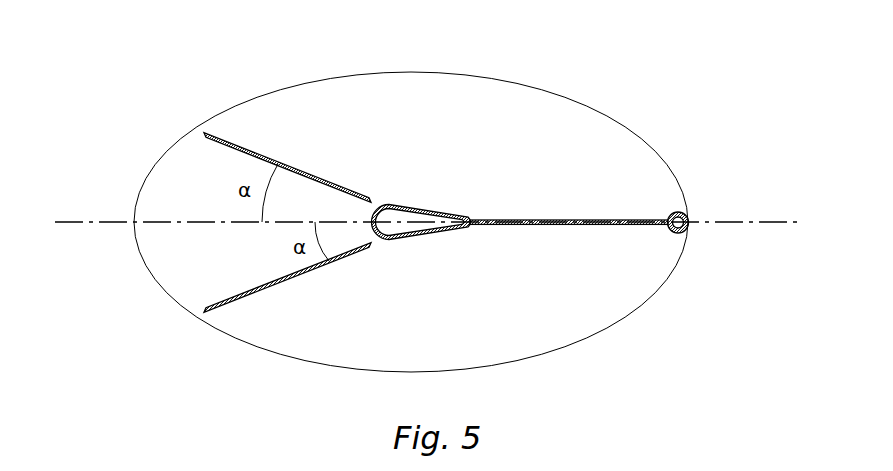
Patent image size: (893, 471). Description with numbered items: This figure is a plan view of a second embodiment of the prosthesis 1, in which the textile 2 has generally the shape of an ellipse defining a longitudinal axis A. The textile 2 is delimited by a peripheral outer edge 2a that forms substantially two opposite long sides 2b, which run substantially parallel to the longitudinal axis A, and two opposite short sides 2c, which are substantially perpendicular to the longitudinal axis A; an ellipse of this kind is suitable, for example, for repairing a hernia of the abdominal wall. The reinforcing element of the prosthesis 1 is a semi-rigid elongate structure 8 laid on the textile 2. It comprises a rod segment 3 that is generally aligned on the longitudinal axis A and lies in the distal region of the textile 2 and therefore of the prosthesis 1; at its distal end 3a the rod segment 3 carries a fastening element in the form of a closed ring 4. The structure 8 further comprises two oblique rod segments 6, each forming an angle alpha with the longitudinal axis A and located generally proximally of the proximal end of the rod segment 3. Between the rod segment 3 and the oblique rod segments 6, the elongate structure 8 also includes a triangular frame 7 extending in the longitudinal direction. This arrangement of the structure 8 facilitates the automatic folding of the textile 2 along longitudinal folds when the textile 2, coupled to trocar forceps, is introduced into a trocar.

The prosthesis 1 is at (318, 64).
The textile 2 is at (472, 291).
The peripheral outer edge 2a is at (401, 64).
The long sides 2b is at (470, 78).
The short sides 2c is at (163, 288).
The rod segment 3 is at (601, 220).
The distal end 3a is at (667, 204).
The closed ring 4 is at (673, 241).
The oblique rod segments 6 is at (258, 145).
The triangular frame 7 is at (412, 262).
The semi-rigid elongate structure 8 is at (544, 262).
The longitudinal axis A is at (70, 222).